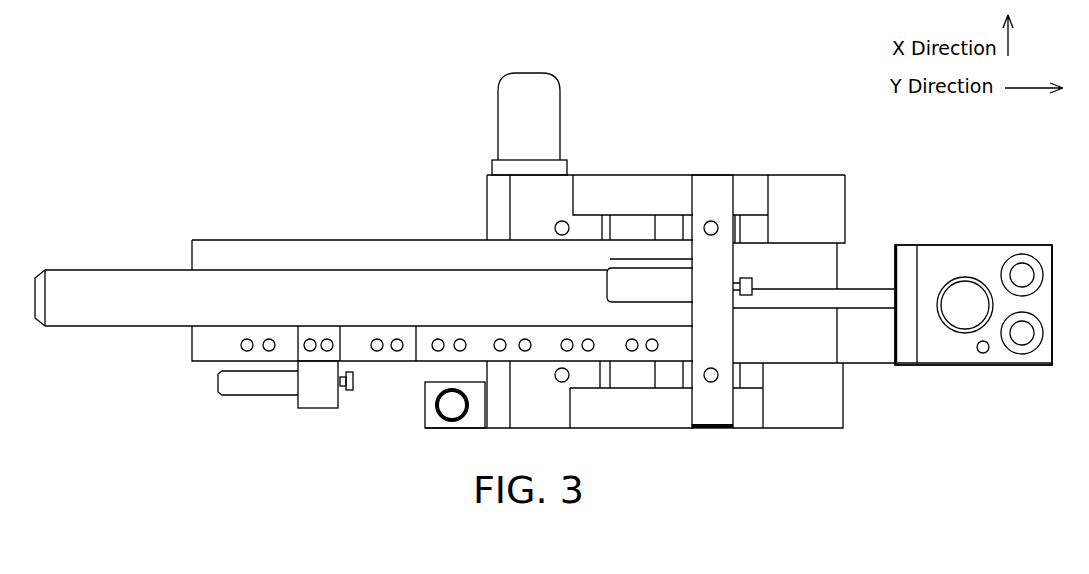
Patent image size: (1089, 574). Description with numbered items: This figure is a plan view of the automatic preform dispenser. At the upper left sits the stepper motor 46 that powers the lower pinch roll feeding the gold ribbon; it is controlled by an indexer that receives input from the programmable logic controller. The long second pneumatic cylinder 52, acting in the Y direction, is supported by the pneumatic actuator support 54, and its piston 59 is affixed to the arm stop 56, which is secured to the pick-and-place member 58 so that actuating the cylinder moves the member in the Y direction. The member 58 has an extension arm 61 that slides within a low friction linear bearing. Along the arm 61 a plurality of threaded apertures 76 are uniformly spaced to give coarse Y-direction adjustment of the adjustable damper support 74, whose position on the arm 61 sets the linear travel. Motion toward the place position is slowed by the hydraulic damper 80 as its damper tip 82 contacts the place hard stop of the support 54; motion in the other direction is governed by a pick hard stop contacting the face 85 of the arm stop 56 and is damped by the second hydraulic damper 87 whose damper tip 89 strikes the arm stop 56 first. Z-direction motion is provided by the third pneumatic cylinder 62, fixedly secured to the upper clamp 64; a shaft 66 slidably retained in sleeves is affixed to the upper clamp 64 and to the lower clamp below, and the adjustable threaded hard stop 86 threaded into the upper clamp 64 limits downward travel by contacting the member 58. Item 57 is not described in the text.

The stepper motor 46 is at (558, 90).
The second pneumatic cylinder 52 is at (105, 326).
The pneumatic actuator support 54 is at (718, 186).
The arm stop 56 is at (897, 365).
The bearing 57 is at (452, 423).
The pick-and-place member 58 is at (1035, 365).
The piston 59 is at (793, 288).
The extension arm 61 is at (237, 239).
The third pneumatic cylinder 62 is at (965, 277).
The upper clamp 64 is at (1000, 245).
The shaft 66 is at (1025, 262).
The adjustable damper support 74 is at (305, 408).
The threaded apertures 76 is at (500, 352).
The hydraulic damper 80 is at (218, 387).
The damper tip 82 is at (393, 277).
The face 85 is at (893, 258).
The adjustable threaded hard stop 86 is at (982, 353).
The second hydraulic damper 87 is at (607, 287).
The damper tip 89 is at (753, 278).